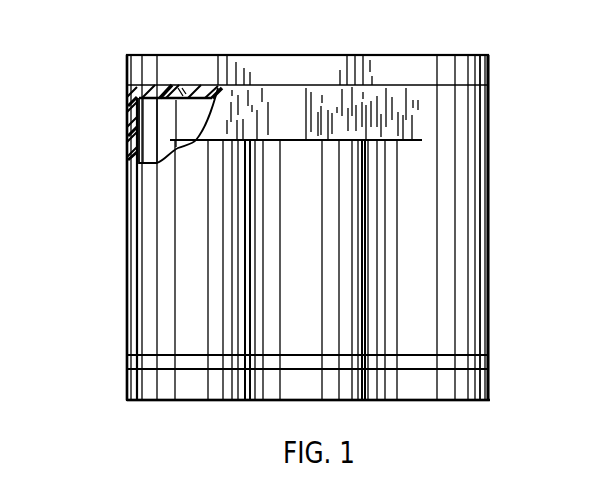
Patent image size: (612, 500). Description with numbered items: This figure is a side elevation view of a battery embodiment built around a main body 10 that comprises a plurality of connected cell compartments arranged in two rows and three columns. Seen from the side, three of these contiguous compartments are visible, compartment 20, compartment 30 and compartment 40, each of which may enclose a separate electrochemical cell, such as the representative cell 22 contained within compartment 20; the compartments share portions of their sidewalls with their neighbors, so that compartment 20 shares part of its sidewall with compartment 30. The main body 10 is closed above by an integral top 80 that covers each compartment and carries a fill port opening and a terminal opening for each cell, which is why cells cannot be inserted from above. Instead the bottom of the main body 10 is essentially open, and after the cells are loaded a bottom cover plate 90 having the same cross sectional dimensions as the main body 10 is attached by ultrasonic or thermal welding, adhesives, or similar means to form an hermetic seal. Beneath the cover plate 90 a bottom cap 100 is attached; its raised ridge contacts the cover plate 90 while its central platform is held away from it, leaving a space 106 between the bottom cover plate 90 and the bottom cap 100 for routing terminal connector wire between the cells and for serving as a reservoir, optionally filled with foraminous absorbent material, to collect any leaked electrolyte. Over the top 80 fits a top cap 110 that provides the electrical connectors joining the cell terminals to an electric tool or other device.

The main body 10 is at (127, 213).
The compartment 20 is at (182, 262).
The cell 22 is at (153, 122).
The compartment 30 is at (303, 290).
The compartment 40 is at (427, 235).
The integral top 80 is at (296, 73).
The bottom cover plate 90 is at (127, 360).
The bottom cap 100 is at (127, 392).
The space 106 is at (387, 377).
The top cap 110 is at (127, 73).